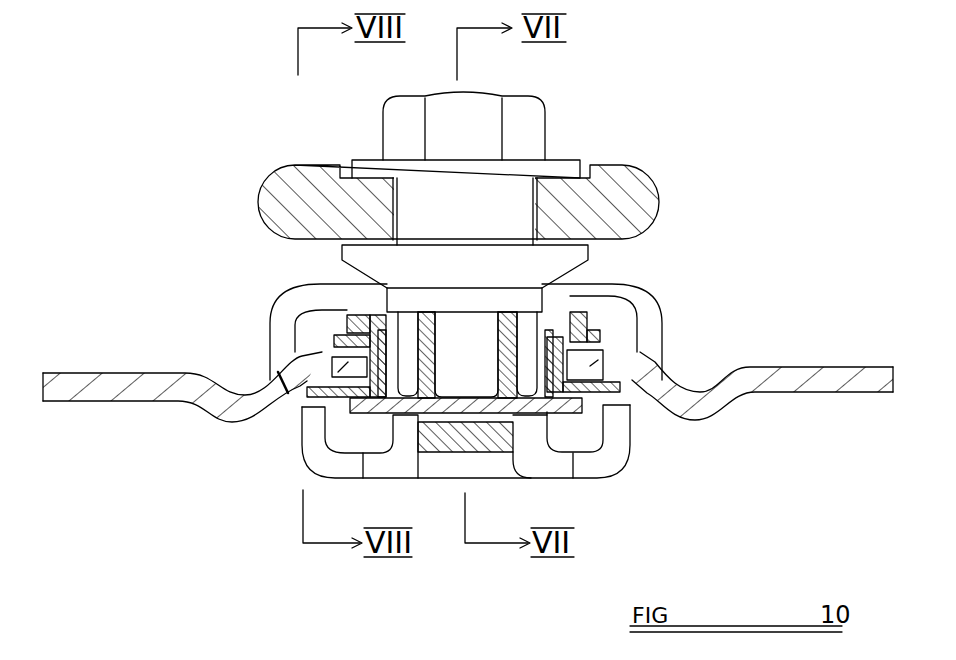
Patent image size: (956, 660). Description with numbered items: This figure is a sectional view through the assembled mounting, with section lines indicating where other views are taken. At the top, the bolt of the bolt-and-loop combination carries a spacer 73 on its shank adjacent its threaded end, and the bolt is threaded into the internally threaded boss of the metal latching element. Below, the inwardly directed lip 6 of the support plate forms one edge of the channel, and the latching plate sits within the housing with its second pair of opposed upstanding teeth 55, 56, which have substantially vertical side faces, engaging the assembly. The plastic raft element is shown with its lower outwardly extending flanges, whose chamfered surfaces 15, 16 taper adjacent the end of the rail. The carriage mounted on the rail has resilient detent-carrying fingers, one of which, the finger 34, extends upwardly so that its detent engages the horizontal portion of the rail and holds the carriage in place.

The inwardly directed lip 6 is at (662, 340).
The chamfered surface 15 is at (589, 414).
The chamfered surface 16 is at (308, 420).
The resilient detent-carrying finger 34 is at (642, 322).
The tooth 55 is at (625, 425).
The tooth 56 is at (313, 444).
The spacer 73 is at (556, 277).